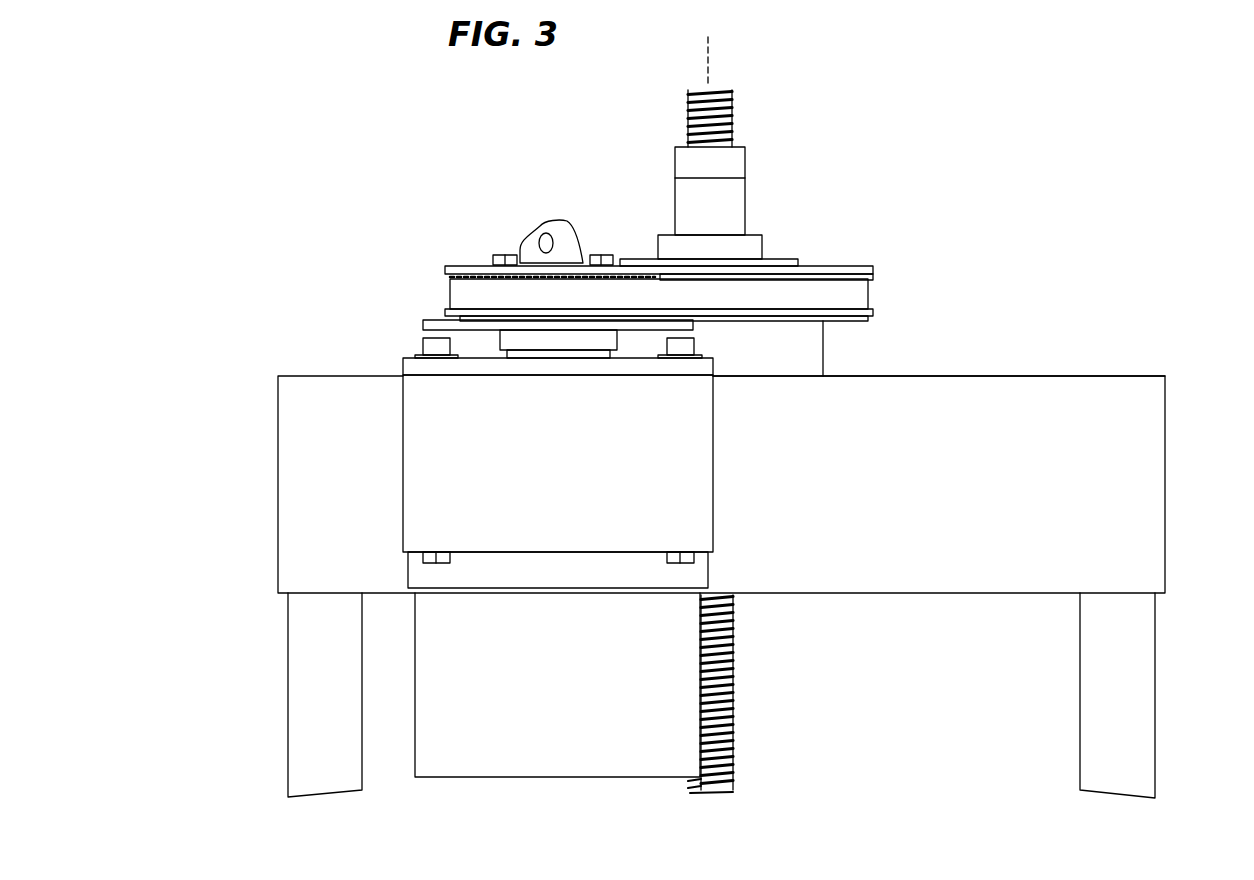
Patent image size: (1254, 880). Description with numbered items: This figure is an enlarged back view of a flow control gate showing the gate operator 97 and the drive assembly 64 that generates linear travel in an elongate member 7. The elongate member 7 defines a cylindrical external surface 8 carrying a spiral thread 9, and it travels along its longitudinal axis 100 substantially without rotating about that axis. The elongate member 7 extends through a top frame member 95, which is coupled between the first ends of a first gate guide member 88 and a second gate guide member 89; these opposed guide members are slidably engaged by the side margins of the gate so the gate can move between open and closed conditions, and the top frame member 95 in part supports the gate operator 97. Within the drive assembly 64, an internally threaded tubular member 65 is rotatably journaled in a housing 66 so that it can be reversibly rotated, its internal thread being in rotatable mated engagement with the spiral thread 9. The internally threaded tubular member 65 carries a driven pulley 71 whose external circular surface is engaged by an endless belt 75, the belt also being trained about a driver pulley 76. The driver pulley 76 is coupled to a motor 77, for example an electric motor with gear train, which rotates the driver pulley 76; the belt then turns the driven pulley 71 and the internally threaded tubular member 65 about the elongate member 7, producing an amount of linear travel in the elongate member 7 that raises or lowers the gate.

The longitudinal axis 100 is at (710, 49).
The elongate member 7 is at (745, 426).
The spiral thread 9 is at (743, 120).
The external surface 8 is at (731, 127).
The internally threaded tubular member 65 is at (745, 210).
The drive assembly 64 is at (700, 426).
The gate operator 97 is at (700, 426).
The driver pulley 76 is at (481, 262).
The driven pulley 71 is at (843, 268).
The endless belt 75 is at (855, 295).
The housing 66 is at (795, 343).
The top frame member 95 is at (1092, 374).
The second gate guide member 89 is at (292, 441).
The first gate guide member 88 is at (1127, 647).
The motor 77 is at (577, 742).